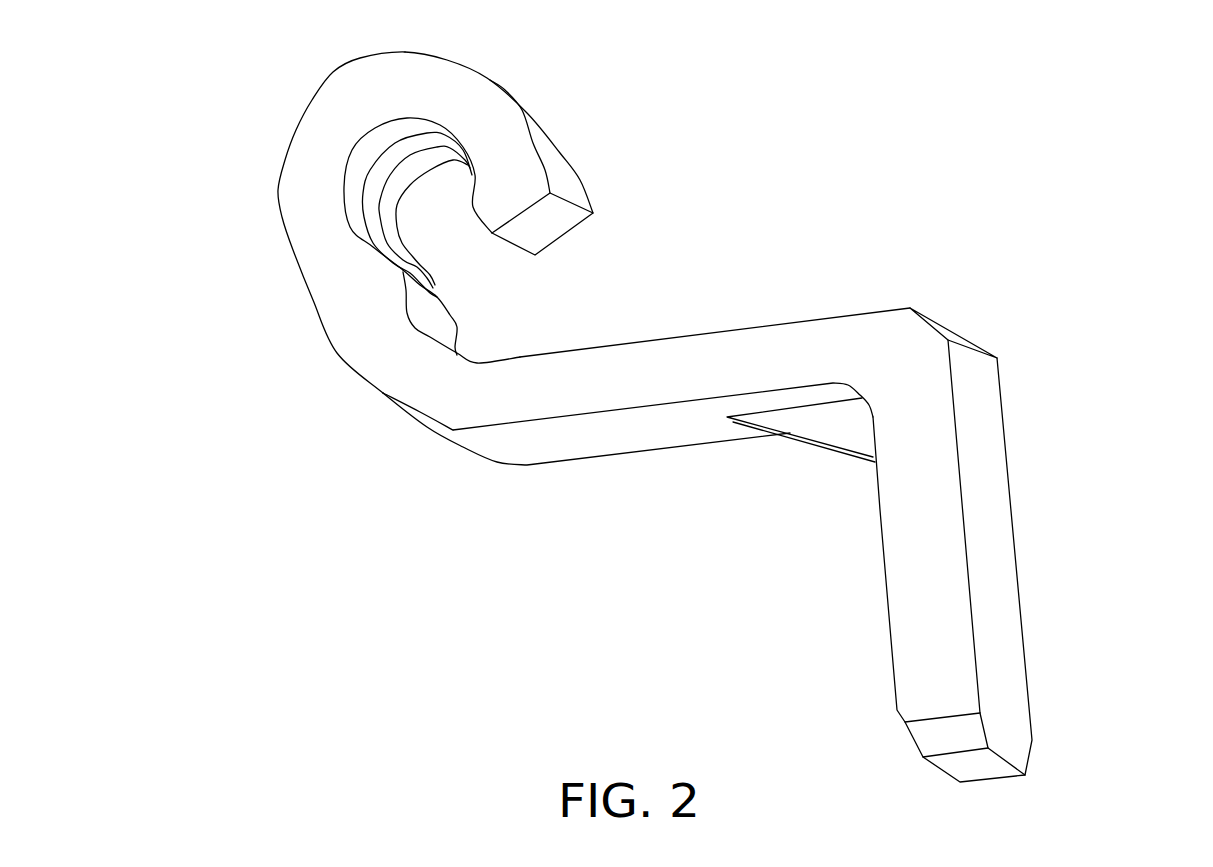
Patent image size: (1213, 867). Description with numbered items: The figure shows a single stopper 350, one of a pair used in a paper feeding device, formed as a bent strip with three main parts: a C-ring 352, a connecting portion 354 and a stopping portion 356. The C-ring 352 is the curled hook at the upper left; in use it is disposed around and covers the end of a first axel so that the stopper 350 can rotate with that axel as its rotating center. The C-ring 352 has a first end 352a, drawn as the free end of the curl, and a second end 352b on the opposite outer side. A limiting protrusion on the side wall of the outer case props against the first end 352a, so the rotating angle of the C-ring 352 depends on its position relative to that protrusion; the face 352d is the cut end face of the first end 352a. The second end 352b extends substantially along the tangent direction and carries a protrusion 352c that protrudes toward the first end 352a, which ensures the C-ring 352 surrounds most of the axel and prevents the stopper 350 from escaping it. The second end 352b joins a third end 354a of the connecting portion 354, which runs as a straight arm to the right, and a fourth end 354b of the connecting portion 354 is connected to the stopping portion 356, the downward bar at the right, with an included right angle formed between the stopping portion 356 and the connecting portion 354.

The stopper 350 is at (691, 417).
The C-ring 352 is at (440, 222).
The first end 352a is at (522, 187).
The second end 352b is at (385, 280).
The protrusion 352c is at (427, 313).
The end face of hook portion 352d is at (545, 223).
The connecting portion 354 is at (646, 450).
The third end 354a is at (455, 393).
The fourth end 354b is at (868, 360).
The stopping portion 356 is at (1002, 575).